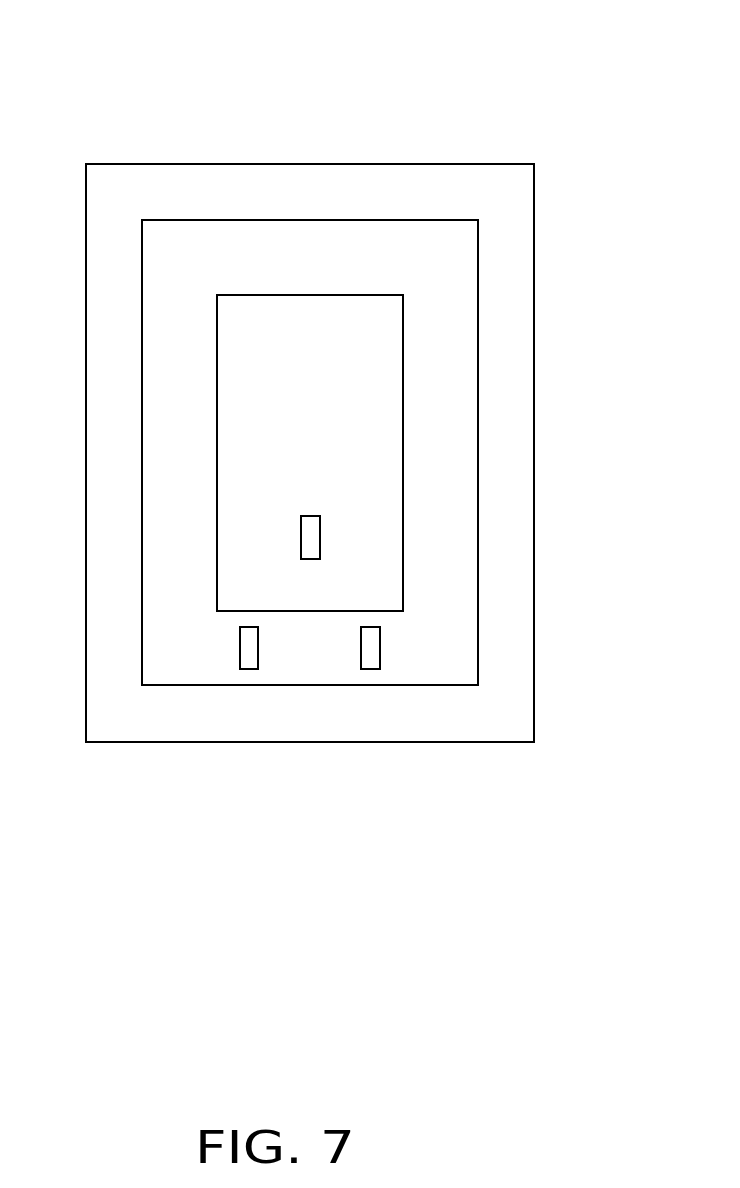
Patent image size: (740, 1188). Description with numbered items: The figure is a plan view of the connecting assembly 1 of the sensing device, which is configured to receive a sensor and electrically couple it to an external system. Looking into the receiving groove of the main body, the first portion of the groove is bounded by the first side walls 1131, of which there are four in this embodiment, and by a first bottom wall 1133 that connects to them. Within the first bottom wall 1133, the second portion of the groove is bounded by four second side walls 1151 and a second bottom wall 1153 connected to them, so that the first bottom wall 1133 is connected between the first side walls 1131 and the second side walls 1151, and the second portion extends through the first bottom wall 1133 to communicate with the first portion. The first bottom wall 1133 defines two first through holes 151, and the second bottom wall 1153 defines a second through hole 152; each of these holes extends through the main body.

The connecting assembly 1 is at (160, 42).
The first side wall 1131 is at (478, 515).
The first bottom wall 1133 is at (448, 438).
The second side wall 1151 is at (404, 576).
The second bottom wall 1153 is at (380, 350).
The first through holes 151 is at (250, 653).
The second through hole 152 is at (311, 548).